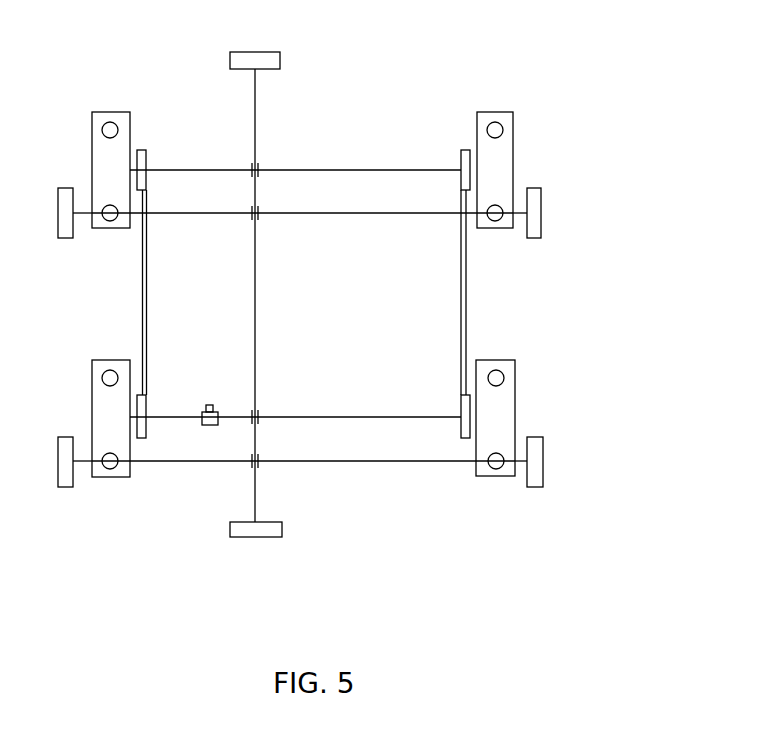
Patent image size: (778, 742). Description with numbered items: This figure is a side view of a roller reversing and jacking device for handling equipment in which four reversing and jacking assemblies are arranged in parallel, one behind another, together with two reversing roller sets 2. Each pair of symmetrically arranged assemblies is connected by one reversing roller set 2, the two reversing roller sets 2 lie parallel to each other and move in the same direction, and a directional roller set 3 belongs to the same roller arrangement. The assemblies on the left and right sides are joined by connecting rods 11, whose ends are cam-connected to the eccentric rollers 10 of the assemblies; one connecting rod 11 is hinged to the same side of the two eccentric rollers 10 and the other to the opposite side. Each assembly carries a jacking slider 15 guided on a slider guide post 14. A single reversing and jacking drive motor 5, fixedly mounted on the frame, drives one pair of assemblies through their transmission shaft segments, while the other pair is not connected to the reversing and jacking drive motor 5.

The directional roller set 3 is at (248, 62).
The connecting rod 11 is at (466, 275).
The eccentric roller 10 is at (147, 397).
The jacking slider 15 is at (103, 395).
The slider guide post 14 is at (110, 462).
The reversing roller set 2 is at (532, 467).
The reversing and jacking drive motor 5 is at (210, 425).